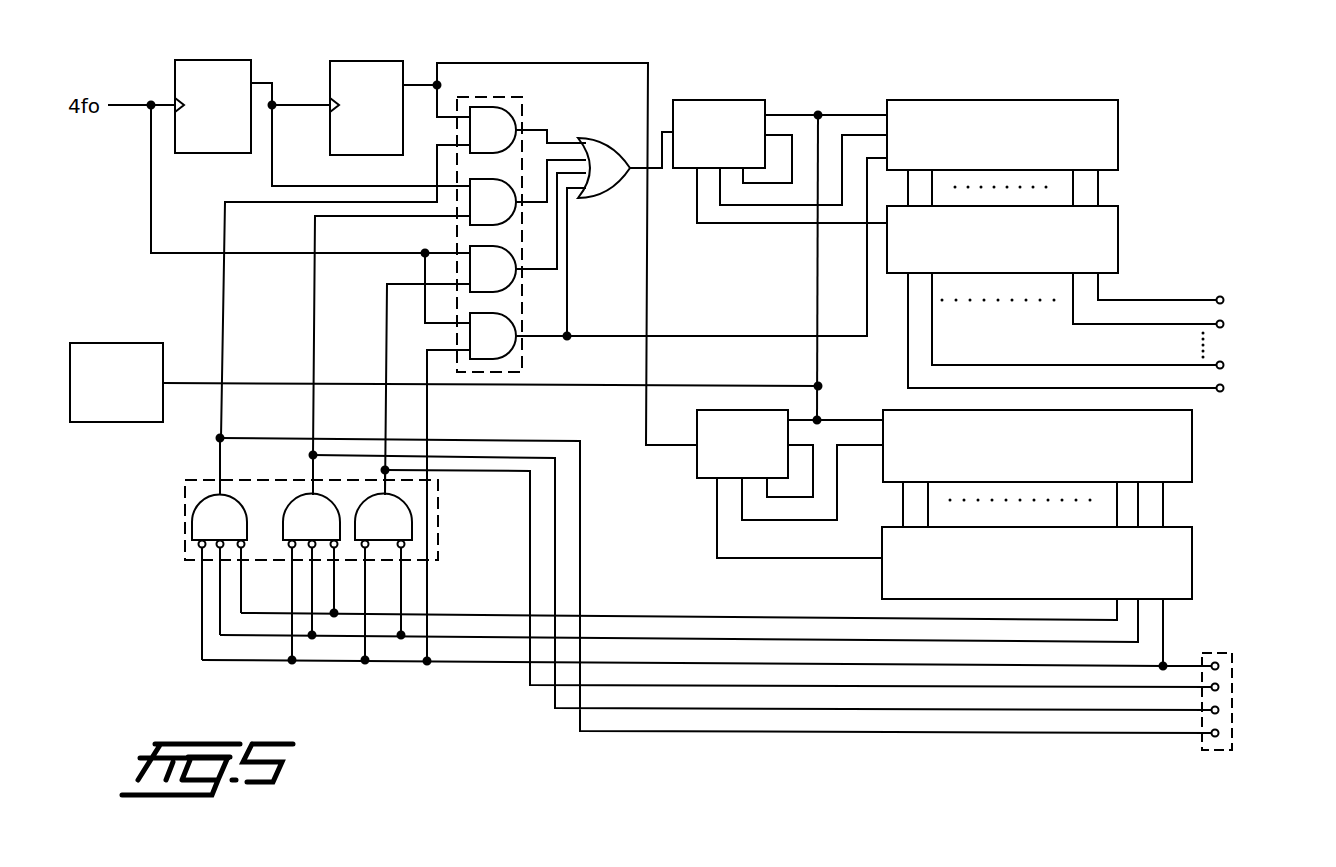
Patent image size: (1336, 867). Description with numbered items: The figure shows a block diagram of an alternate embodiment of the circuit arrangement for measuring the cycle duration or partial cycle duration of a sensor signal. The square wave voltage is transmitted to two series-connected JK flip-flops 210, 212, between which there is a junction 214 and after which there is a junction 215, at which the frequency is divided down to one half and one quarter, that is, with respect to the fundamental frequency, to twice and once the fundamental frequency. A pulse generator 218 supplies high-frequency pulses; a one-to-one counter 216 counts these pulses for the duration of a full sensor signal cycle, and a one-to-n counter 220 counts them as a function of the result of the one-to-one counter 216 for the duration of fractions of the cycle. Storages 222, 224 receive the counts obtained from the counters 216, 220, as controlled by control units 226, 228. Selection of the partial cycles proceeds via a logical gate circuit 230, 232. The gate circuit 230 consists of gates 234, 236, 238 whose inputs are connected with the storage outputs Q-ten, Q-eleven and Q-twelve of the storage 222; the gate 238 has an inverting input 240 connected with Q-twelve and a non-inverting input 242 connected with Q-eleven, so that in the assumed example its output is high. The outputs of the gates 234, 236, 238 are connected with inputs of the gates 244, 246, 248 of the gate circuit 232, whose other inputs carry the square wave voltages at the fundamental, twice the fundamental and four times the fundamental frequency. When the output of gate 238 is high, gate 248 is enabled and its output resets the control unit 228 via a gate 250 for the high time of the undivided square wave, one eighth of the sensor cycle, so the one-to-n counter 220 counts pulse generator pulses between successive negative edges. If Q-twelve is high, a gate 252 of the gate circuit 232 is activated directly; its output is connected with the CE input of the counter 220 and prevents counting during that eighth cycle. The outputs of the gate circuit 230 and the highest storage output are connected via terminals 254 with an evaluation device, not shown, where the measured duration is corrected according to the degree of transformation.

The JK flip-flop 210 is at (224, 60).
The JK flip-flop 212 is at (375, 61).
The junction 214 is at (275, 107).
The junction 215 is at (440, 90).
The 1/1 counter 216 is at (1192, 432).
The pulse generator 218 is at (118, 343).
The 1/n counter 220 is at (1118, 120).
The storage 222 is at (1192, 560).
The storage 224 is at (1118, 212).
The control unit 226 is at (705, 478).
The control unit 228 is at (731, 100).
The logical gate circuit 230 is at (664, 584).
The logical gate circuit 232 is at (716, 379).
The gate 234 is at (192, 526).
The gate 236 is at (300, 506).
The gate 238 is at (421, 567).
The inverting input 240 is at (370, 549).
The non-inverting input 242 is at (406, 546).
The gate 244 is at (512, 122).
The gate 246 is at (497, 226).
The gate 248 is at (510, 286).
The gate 250 is at (624, 190).
The gate 252 is at (512, 353).
The terminals 254 is at (1232, 659).